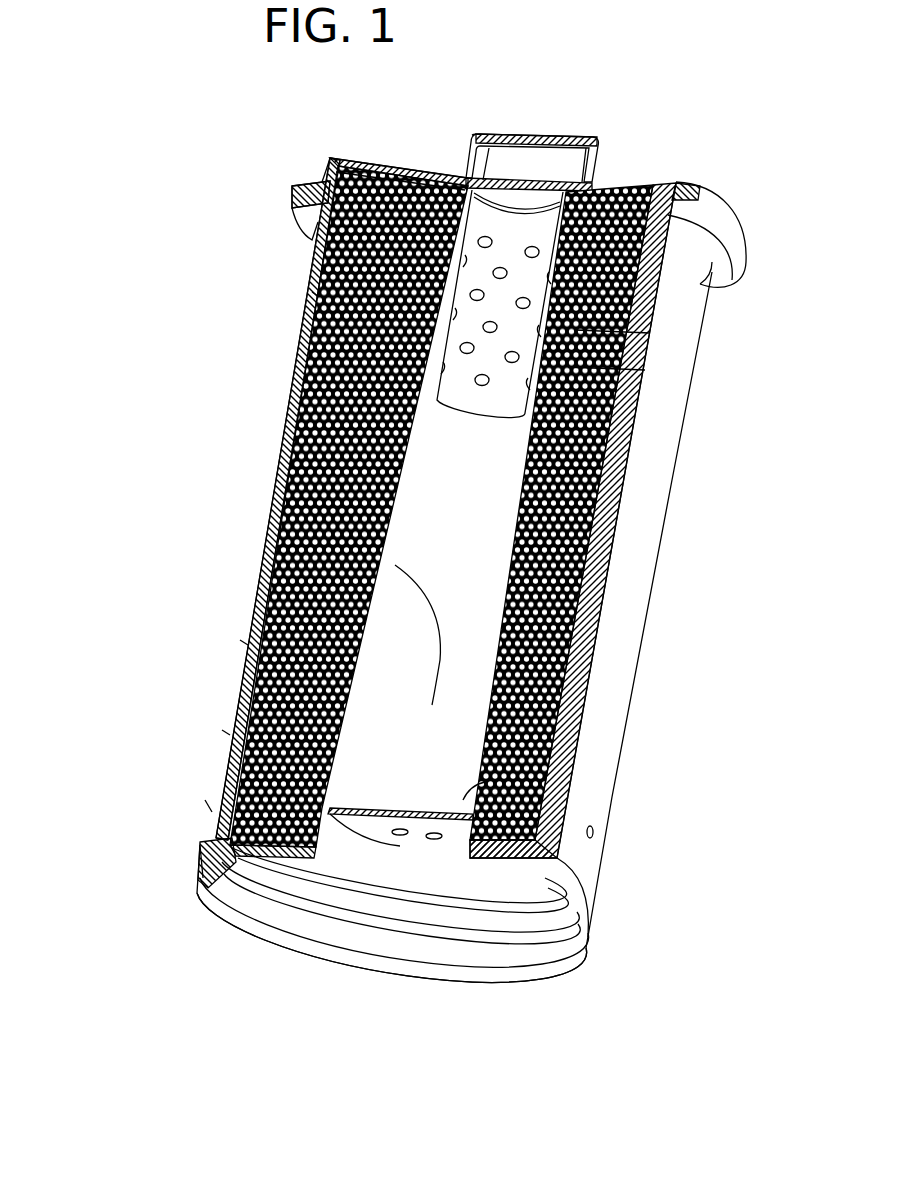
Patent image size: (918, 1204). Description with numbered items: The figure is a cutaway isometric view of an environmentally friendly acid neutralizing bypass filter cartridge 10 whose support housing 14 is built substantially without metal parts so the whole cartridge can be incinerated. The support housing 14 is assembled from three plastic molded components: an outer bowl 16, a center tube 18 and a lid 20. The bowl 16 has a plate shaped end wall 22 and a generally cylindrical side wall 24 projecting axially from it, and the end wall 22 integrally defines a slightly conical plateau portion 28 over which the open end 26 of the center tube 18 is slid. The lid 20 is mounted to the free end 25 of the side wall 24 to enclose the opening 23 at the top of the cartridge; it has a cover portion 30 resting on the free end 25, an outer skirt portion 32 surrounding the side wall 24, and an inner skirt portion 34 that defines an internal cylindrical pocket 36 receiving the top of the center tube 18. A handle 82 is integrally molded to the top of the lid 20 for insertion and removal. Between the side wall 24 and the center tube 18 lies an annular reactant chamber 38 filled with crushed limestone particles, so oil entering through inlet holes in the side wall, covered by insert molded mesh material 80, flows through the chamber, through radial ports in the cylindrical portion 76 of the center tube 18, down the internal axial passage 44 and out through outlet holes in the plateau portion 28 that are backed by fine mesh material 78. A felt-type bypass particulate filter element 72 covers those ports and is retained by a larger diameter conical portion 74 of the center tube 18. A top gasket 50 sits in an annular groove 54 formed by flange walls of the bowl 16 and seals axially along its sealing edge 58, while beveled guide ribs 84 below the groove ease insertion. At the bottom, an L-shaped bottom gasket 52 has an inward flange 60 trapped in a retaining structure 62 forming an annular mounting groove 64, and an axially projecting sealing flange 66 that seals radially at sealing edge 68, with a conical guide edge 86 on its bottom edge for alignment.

The filter cartridge 10 is at (150, 122).
The support housing 14 is at (262, 447).
The outer plastic molded bowl 16 is at (252, 497).
The center tube 18 is at (618, 523).
The lid 20 is at (630, 172).
The end wall 22 is at (495, 875).
The opening 23 is at (672, 178).
The side wall 24 is at (668, 457).
The free end 25 is at (690, 184).
The open end 26 is at (577, 777).
The plateau portion 28 is at (345, 822).
The cover portion 30 is at (410, 162).
The outer skirt portion 32 is at (324, 160).
The inner skirt portion 34 is at (474, 182).
The internal cylindrical pocket 36 is at (486, 190).
The annular reactant chamber 38 is at (252, 592).
The internal axial passage 44 is at (265, 542).
The top gasket 50 is at (282, 196).
The bottom gasket 52 is at (180, 875).
The annular groove 54 is at (342, 168).
The sealing edge 58 is at (295, 188).
The radially inward projecting flange 60 is at (212, 792).
The retaining structure 62 is at (226, 886).
The annular mounting groove 64 is at (250, 882).
The axially projecting annular sealing flange 66 is at (210, 882).
The radial sealing edge 68 is at (426, 935).
The bypass particulate filter element 72 is at (312, 296).
The conical portion 74 is at (598, 627).
The cylindrical portion 76 is at (510, 402).
The fine mesh material 78 is at (578, 730).
The mesh material 80 is at (205, 820).
The handle 82 is at (556, 135).
The guide ribs 84 is at (735, 278).
The conical guide edge 86 is at (262, 945).